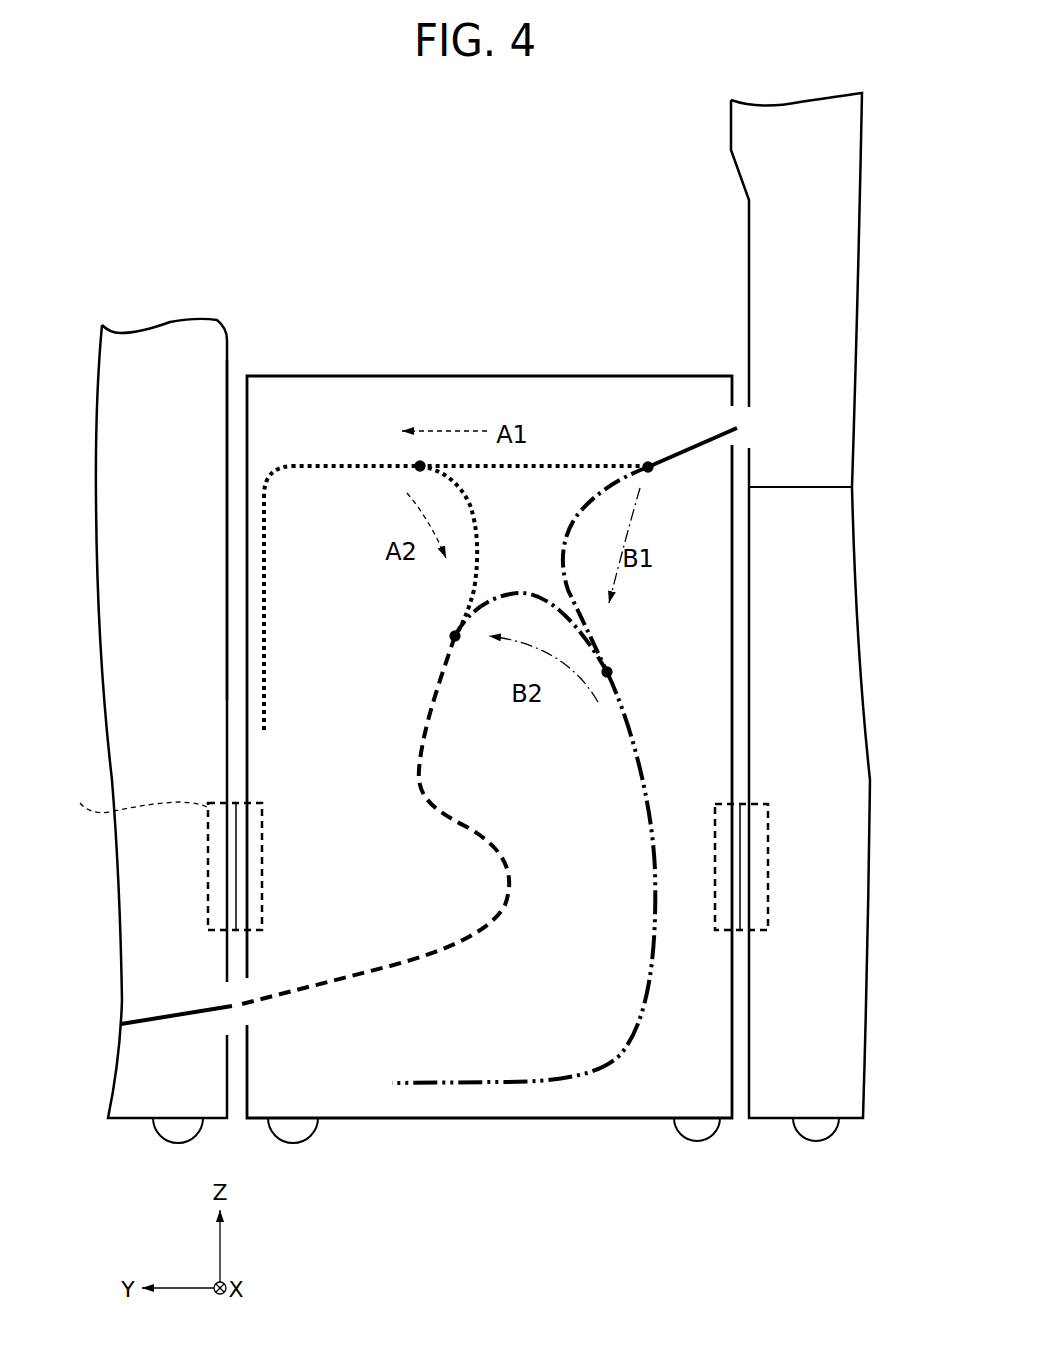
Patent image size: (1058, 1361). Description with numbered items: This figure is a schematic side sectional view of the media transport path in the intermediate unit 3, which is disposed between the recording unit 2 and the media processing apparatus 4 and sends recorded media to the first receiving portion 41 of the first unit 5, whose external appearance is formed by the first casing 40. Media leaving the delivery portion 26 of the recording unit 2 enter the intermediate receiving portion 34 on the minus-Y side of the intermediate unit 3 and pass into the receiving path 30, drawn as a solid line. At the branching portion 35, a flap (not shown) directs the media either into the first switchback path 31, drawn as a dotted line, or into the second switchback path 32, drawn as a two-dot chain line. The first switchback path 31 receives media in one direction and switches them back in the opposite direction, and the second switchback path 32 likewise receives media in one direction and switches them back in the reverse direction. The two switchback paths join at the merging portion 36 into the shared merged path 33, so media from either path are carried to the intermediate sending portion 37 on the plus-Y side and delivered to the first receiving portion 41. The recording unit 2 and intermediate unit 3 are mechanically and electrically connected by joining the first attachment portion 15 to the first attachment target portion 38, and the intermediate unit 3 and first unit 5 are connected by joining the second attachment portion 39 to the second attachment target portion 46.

The recording unit 2 is at (703, 140).
The intermediate unit 3 is at (439, 350).
The media processing apparatus 4 is at (161, 657).
The first unit 5 is at (163, 290).
The first attachment portion 15 is at (767, 930).
The delivery portion 26 is at (757, 405).
The receiving path 30 is at (703, 443).
The first switchback path 31 is at (320, 463).
The second switchback path 32 is at (645, 780).
The merged path 33 is at (419, 764).
The intermediate receiving portion 34 is at (727, 415).
The branching portion 35 is at (645, 465).
The merging portion 36 is at (453, 634).
The intermediate sending portion 37 is at (259, 988).
The first attachment target portion 38 is at (715, 930).
The second attachment portion 39 is at (262, 800).
The first casing 40 is at (227, 362).
The first receiving portion 41 is at (226, 998).
The second attachment target portion 46 is at (137, 791).